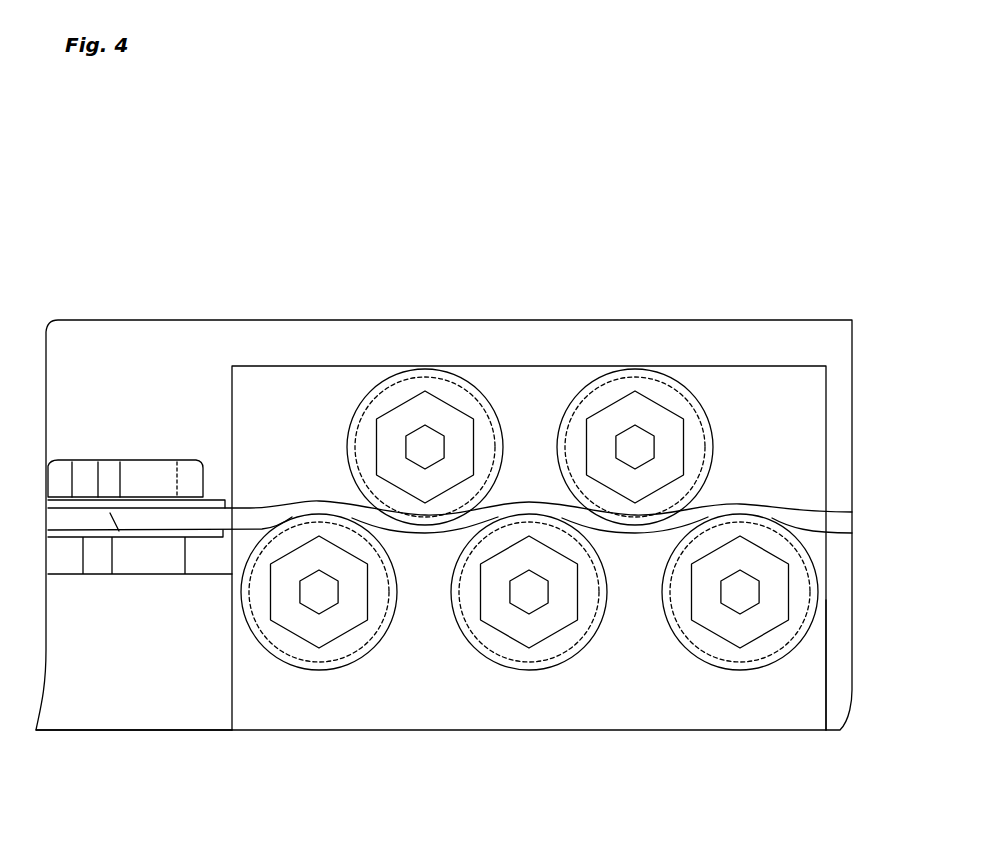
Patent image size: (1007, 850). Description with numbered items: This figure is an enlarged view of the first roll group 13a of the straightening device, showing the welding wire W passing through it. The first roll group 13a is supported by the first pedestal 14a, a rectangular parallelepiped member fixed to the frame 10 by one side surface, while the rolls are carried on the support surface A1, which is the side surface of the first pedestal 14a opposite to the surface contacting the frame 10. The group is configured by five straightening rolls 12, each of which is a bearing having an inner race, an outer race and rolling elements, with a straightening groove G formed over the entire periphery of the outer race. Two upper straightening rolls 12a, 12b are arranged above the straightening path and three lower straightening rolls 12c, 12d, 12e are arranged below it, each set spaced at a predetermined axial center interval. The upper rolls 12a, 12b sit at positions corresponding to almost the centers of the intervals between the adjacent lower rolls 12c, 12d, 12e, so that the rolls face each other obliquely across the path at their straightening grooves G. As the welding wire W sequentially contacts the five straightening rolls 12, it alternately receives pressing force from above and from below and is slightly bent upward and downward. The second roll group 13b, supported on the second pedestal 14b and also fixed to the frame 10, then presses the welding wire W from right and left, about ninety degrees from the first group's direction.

The frame 10 is at (718, 320).
The straightening roll 12 is at (529, 533).
The upper straightening roll 12a is at (370, 403).
The upper straightening roll 12b is at (580, 403).
The lower straightening roll 12c is at (373, 643).
The lower straightening roll 12d is at (565, 662).
The lower straightening roll 12e is at (695, 660).
The first roll group 13a is at (510, 396).
The second roll group 13b is at (101, 438).
The first pedestal 14a is at (825, 697).
The second pedestal 14b is at (118, 730).
The support surface A1 is at (779, 390).
The straightening groove G is at (93, 527).
The welding wire W is at (806, 512).